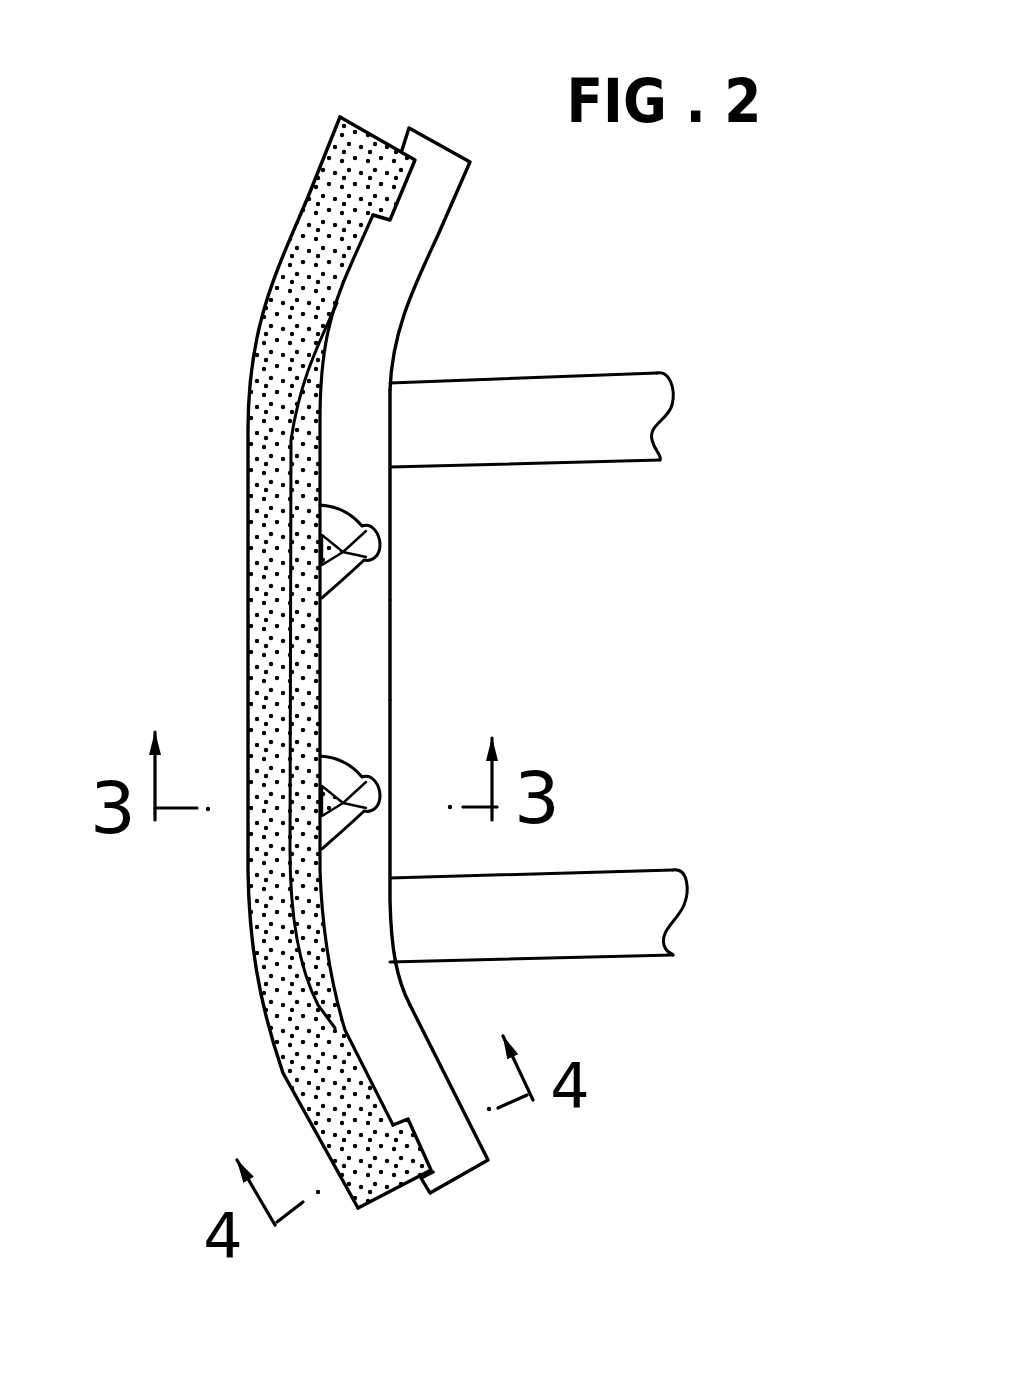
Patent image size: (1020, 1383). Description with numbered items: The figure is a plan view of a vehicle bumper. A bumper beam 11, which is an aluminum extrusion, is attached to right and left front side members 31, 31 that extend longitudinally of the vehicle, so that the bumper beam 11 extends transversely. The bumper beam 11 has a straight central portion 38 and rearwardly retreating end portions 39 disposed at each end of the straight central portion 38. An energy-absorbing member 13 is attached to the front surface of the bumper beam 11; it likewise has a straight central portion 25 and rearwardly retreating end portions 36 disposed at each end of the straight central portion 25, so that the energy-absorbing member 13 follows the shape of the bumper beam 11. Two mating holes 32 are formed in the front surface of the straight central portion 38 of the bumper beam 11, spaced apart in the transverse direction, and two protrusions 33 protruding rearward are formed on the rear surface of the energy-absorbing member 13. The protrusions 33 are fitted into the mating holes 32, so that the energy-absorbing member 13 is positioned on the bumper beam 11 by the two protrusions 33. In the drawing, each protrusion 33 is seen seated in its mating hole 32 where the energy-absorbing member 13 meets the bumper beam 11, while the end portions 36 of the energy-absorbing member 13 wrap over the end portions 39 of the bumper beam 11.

The bumper beam 11 is at (365, 695).
The energy-absorbing member 13 is at (252, 683).
The straight central portion 25 is at (270, 570).
The front side member 31 is at (578, 438).
The mating hole 32 is at (365, 522).
The protrusion 33 is at (343, 553).
The rearwardly retreating end portion 36 is at (360, 147).
The straight central portion 38 is at (373, 650).
The rearwardly retreating end portion 39 is at (432, 205).